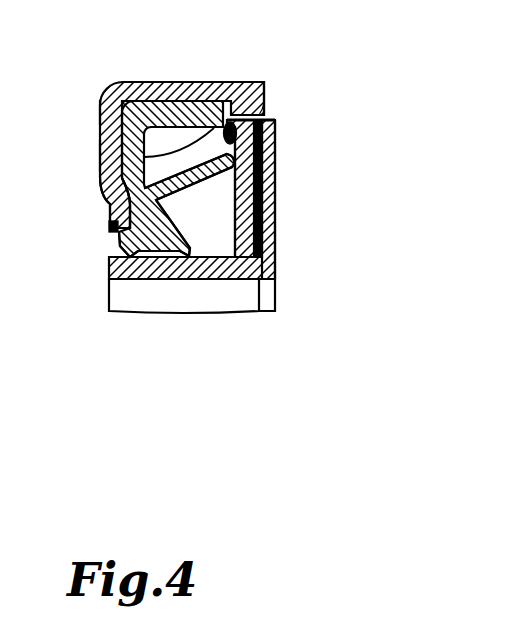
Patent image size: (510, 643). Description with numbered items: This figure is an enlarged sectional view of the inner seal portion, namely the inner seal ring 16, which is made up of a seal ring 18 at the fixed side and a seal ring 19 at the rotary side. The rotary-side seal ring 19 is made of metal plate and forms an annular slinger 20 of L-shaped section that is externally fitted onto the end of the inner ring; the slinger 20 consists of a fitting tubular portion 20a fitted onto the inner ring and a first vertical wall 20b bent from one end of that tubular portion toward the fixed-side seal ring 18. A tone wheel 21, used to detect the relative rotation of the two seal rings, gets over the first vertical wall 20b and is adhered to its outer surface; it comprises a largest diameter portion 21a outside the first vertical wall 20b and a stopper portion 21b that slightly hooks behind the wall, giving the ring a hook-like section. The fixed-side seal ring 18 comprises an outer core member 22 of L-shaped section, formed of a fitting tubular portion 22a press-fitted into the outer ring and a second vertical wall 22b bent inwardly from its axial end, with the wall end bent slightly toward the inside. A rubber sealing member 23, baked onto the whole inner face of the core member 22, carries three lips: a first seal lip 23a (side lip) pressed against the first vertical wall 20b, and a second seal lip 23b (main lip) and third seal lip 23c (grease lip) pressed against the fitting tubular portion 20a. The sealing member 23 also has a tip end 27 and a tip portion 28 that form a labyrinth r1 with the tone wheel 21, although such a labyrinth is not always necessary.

The inner seal ring 16 is at (255, 190).
The seal ring at a fixed side 18 is at (89, 101).
The seal ring at a rotary side 19 is at (206, 279).
The slinger 20 is at (265, 278).
The fitting tubular portion 20a is at (126, 262).
The first vertical wall 20b is at (265, 235).
The tone wheel 21 is at (263, 205).
The largest diameter portion 21a is at (263, 109).
The stopper portion 21b is at (263, 144).
The outer core member 22 is at (92, 128).
The fitting tubular portion 22a is at (220, 74).
The second vertical wall 22b is at (91, 174).
The sealing member 23 is at (156, 93).
The first seal lip 23a is at (255, 182).
The second seal lip 23b is at (168, 254).
The third seal lip 23c is at (101, 238).
The tip end 27 is at (263, 126).
The tip portion 28 is at (93, 145).
The labyrinth r1 is at (263, 108).